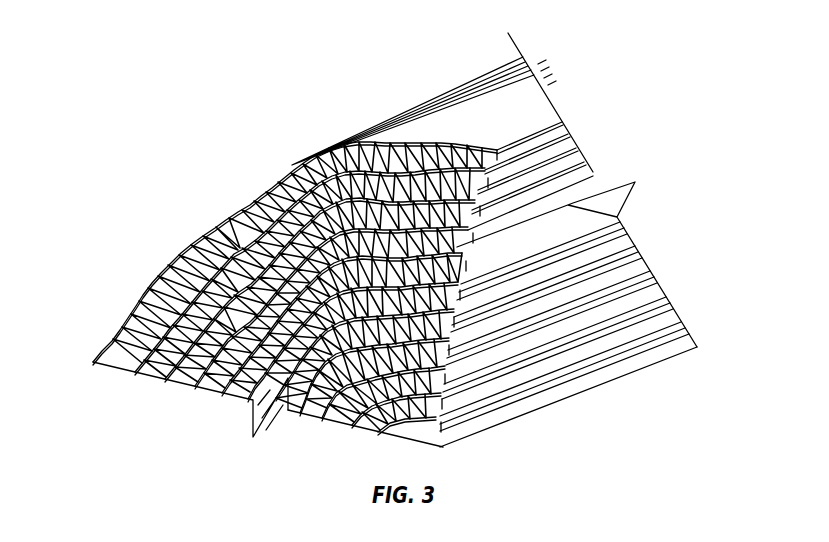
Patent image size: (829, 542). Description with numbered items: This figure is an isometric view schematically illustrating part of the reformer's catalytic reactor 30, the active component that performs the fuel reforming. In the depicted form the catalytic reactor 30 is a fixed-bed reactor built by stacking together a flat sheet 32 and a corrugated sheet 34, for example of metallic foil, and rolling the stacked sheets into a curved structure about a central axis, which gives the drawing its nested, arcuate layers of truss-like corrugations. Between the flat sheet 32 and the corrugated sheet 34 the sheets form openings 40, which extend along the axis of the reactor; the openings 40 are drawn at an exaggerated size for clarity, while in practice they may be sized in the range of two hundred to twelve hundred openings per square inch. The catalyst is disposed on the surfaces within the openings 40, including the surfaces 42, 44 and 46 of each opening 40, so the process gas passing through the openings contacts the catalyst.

The catalytic reactor 30 is at (423, 100).
The flat sheet 32 is at (217, 388).
The corrugated sheet 34 is at (195, 387).
The openings 40 is at (123, 362).
The surface 42 is at (580, 168).
The surface 44 is at (610, 224).
The surface 46 is at (447, 372).